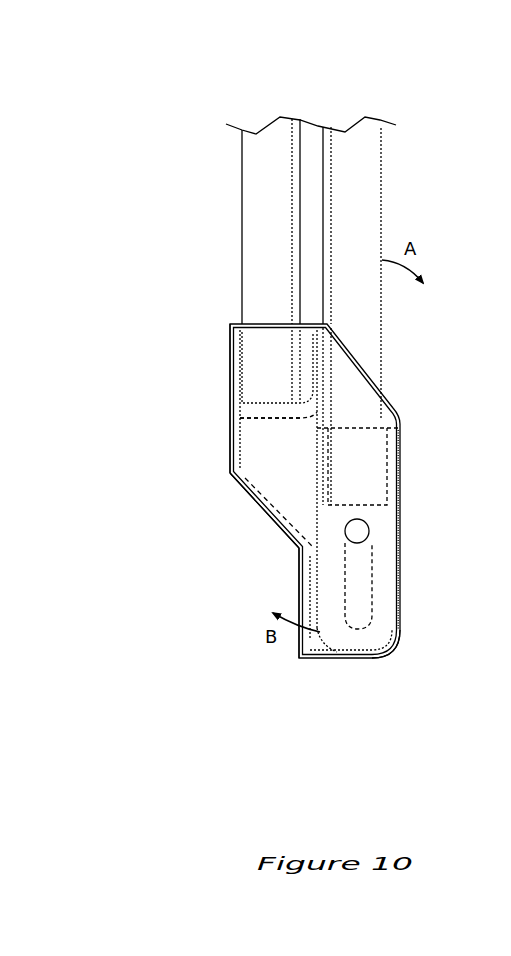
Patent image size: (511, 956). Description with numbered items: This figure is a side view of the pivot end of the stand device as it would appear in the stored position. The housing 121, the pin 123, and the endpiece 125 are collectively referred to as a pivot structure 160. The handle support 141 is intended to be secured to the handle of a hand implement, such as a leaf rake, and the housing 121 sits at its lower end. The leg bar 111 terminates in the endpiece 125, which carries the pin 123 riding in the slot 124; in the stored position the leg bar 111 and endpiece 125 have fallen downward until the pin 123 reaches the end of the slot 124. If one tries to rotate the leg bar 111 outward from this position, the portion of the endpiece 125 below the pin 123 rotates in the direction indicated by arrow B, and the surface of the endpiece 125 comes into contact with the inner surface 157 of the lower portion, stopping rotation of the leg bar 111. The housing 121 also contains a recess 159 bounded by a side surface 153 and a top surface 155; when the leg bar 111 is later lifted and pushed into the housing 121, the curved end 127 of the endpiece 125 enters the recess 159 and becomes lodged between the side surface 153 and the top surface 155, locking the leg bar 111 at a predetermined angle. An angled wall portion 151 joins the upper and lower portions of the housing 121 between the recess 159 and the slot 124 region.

The leg bar 111 is at (382, 215).
The handle support 141 is at (241, 275).
The housing 121 is at (402, 426).
The endpiece 125 is at (398, 517).
The pin 123 is at (369, 531).
The slot 124 is at (373, 594).
The curved end 127 is at (382, 653).
The angled wall portion 151 is at (274, 505).
The side surface 153 is at (240, 450).
The top surface 155 is at (277, 425).
The inner surface 157 is at (320, 595).
The recess 159 is at (297, 472).
The pivot structure 160 is at (158, 566).